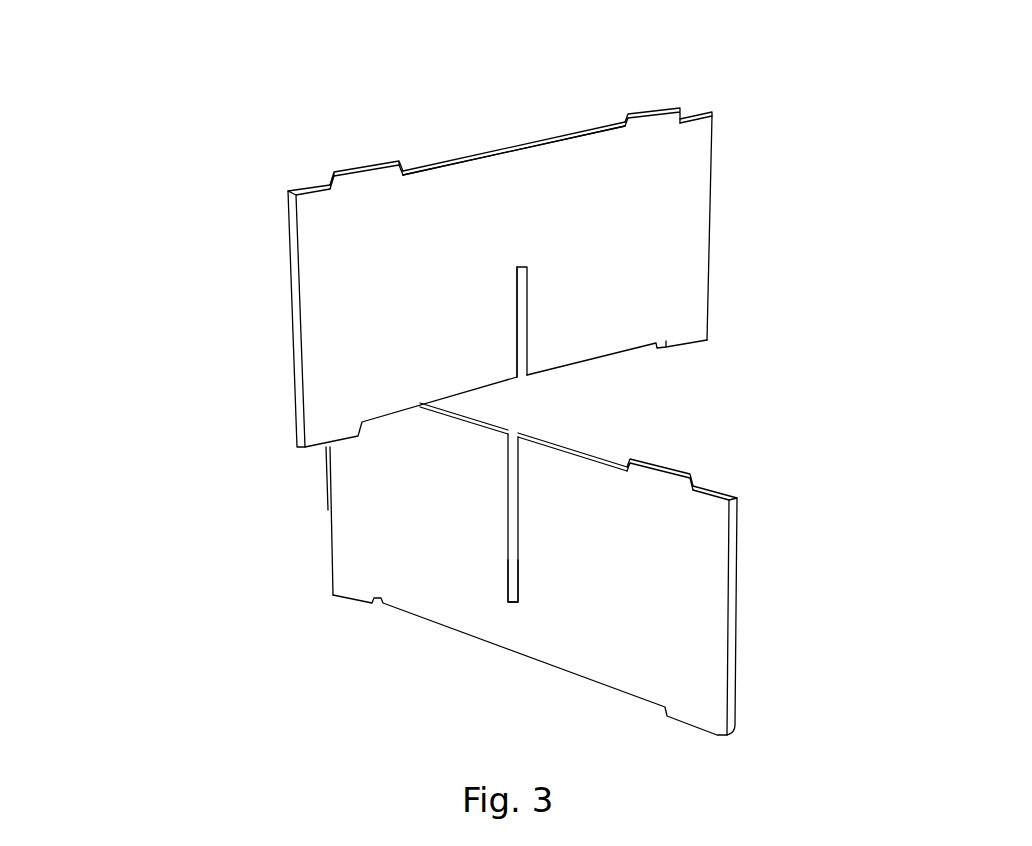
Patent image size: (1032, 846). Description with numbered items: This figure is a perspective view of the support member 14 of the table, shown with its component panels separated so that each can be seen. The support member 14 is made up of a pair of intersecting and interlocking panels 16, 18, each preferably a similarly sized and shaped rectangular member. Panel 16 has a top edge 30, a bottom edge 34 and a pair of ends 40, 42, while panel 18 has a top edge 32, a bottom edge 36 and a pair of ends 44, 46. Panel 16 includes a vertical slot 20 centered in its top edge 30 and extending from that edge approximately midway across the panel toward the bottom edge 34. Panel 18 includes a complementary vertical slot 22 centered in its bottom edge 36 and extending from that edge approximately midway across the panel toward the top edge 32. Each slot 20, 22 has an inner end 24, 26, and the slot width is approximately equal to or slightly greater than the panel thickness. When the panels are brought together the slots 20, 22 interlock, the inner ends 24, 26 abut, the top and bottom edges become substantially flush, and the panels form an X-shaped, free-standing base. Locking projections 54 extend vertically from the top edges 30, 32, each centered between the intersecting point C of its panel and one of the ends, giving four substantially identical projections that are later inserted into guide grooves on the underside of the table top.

The support member 14 is at (175, 188).
The panel 16 is at (697, 655).
The panel 18 is at (355, 290).
The vertical slot 20 is at (517, 530).
The vertical slot 22 is at (517, 330).
The inner end 24 is at (518, 593).
The inner end 26 is at (522, 265).
The top edge 30 is at (578, 452).
The top edge 32 is at (482, 152).
The bottom edge 34 is at (520, 655).
The bottom edge 36 is at (468, 393).
The end 40 is at (733, 596).
The end 42 is at (327, 508).
The end 44 is at (292, 360).
The end 46 is at (712, 207).
The locking projection 54 is at (648, 113).
The intersecting point C is at (510, 150).